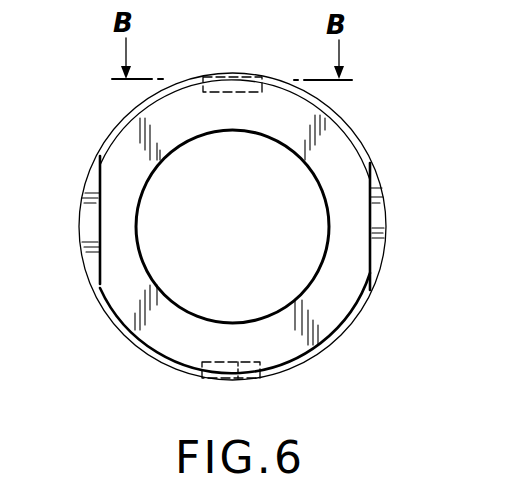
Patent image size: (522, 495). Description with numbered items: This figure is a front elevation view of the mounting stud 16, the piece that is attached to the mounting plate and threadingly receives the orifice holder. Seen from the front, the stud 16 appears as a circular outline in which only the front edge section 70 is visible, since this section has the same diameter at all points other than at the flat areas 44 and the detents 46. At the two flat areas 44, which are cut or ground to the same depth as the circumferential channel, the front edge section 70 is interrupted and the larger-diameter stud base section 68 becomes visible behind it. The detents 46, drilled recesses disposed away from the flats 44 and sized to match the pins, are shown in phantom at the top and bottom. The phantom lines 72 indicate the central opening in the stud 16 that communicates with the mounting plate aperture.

The mounting stud 16 is at (378, 335).
The flat areas 44 is at (64, 273).
The detents 46 is at (233, 88).
The stud base section 68 is at (56, 238).
The front edge section 70 is at (342, 150).
The phantom lines 72 is at (280, 147).